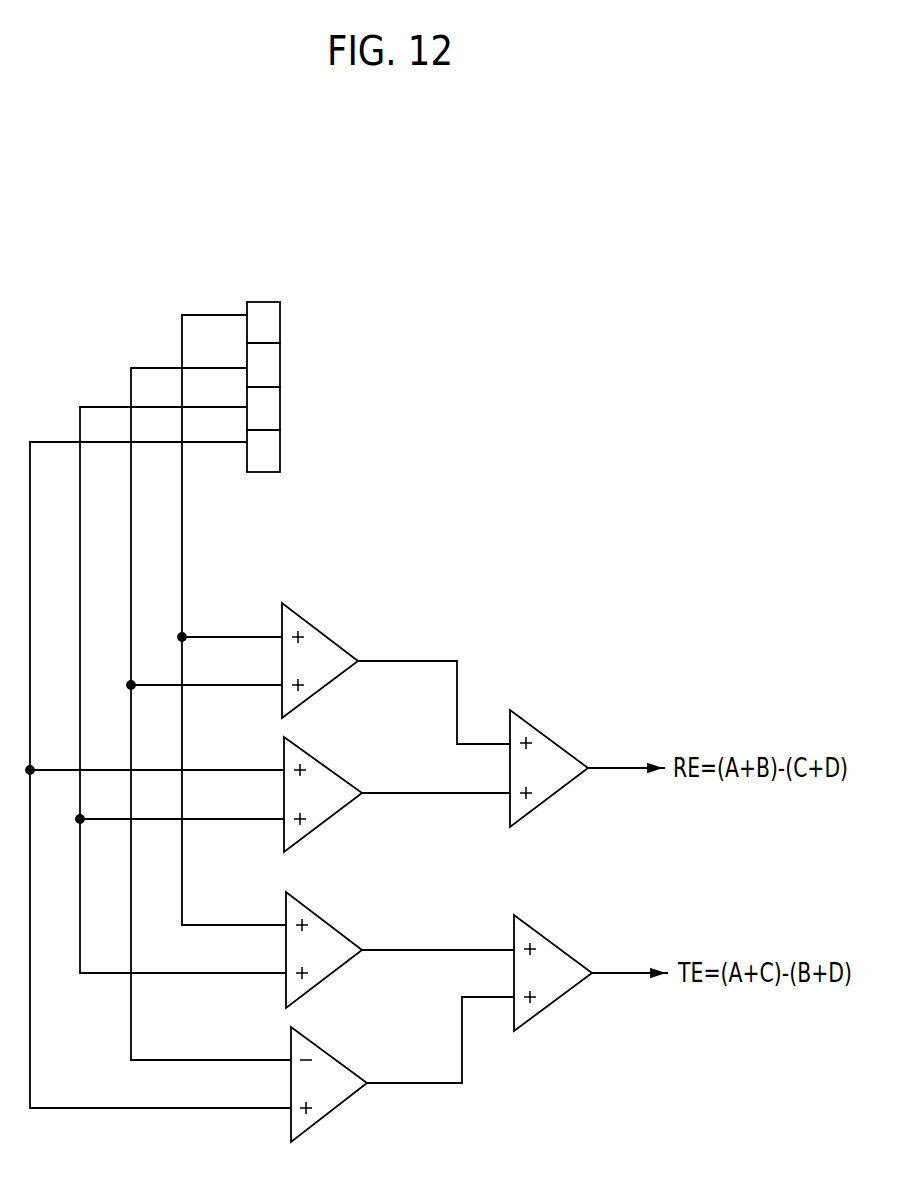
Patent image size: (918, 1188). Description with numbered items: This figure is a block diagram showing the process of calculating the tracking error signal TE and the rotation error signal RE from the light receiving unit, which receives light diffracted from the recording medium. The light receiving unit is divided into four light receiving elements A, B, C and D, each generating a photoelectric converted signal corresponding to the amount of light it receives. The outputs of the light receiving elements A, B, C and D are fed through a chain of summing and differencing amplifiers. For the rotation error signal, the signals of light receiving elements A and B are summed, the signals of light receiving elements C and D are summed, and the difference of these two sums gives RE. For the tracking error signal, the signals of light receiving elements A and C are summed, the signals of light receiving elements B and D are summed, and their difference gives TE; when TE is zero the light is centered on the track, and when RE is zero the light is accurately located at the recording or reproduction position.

The light receiving element A is at (276, 322).
The light receiving element B is at (276, 365).
The light receiving element C is at (276, 408).
The light receiving element D is at (277, 451).